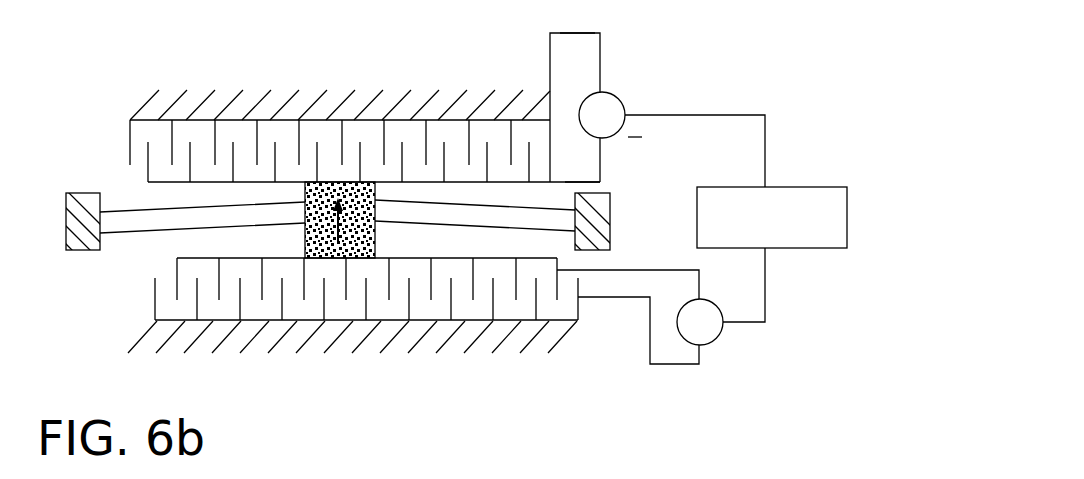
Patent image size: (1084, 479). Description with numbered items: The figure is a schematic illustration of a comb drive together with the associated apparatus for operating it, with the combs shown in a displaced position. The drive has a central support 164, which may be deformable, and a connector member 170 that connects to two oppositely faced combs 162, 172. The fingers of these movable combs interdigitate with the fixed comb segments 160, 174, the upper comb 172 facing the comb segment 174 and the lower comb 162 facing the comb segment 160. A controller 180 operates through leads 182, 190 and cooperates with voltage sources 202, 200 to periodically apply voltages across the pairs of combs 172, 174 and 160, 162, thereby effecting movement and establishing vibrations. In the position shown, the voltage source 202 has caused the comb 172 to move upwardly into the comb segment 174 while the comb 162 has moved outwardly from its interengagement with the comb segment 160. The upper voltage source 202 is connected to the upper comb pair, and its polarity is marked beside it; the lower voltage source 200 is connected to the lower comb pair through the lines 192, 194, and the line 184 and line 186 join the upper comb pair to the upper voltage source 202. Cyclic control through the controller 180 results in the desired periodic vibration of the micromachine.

The comb segment 160 is at (155, 303).
The comb 162 is at (177, 258).
The central support 164 is at (126, 201).
The connector member 170 is at (305, 182).
The comb 172 is at (518, 160).
The comb segment 174 is at (255, 145).
The controller 180 is at (797, 187).
The lead 182 is at (766, 153).
The lead to upper fixed comb 184 is at (586, 33).
The lead to upper movable comb 186 is at (573, 180).
The lead 190 is at (765, 287).
The lead from lower movable comb to voltmeter 192 is at (610, 270).
The lead from lower fixed comb to voltmeter 194 is at (630, 297).
The voltage source 200 is at (720, 336).
The voltage source 202 is at (624, 106).